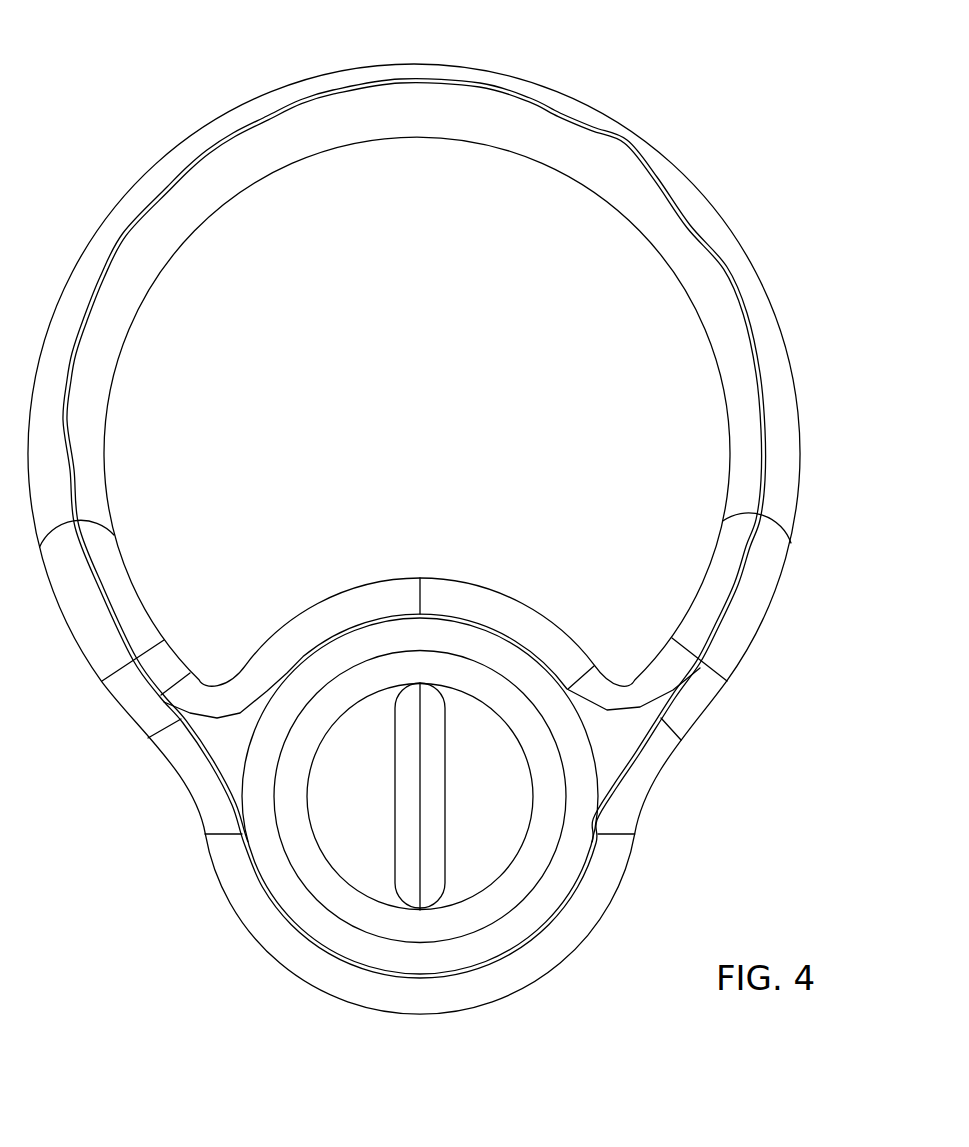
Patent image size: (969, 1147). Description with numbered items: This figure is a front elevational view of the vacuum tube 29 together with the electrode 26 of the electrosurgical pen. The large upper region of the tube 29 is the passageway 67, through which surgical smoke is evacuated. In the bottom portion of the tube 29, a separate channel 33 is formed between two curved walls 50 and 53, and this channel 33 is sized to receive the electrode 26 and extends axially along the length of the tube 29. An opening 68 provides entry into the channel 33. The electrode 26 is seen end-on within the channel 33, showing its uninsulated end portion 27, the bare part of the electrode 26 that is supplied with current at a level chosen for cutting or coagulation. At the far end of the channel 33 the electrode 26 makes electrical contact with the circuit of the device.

The vacuum tube 29 is at (183, 152).
The passageway 67 is at (457, 371).
The curved wall 53 is at (450, 614).
The channel 33 is at (234, 764).
The opening 68 is at (620, 743).
The curved wall 50 is at (420, 984).
The electrode 26 is at (363, 815).
The uninsulated end portion 27 is at (427, 838).